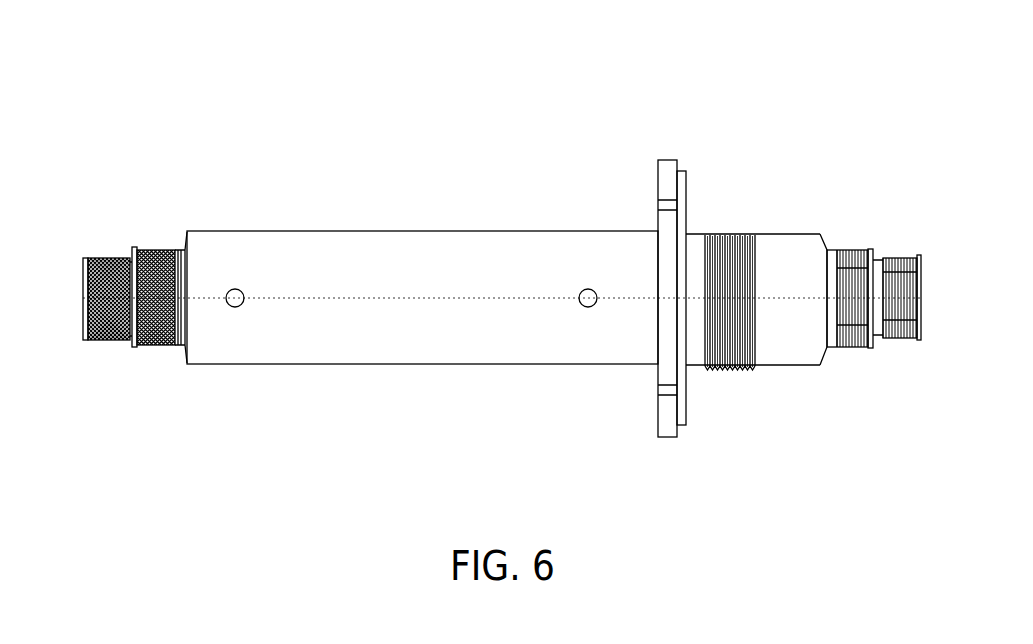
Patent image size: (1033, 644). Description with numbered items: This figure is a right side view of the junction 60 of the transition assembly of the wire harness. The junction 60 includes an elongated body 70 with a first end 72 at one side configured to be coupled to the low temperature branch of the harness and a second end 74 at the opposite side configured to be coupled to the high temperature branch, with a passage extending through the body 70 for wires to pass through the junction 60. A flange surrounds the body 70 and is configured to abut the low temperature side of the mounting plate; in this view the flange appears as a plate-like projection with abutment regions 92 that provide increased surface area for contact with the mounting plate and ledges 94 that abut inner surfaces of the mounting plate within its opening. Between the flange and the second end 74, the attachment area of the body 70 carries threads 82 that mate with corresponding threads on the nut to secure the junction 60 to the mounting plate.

The junction 60 is at (842, 75).
The body 70 is at (468, 358).
The first end 72 is at (82, 270).
The second end 74 is at (922, 260).
The threads 82 is at (730, 238).
The abutment regions 92 is at (667, 162).
The ledges 94 is at (687, 182).